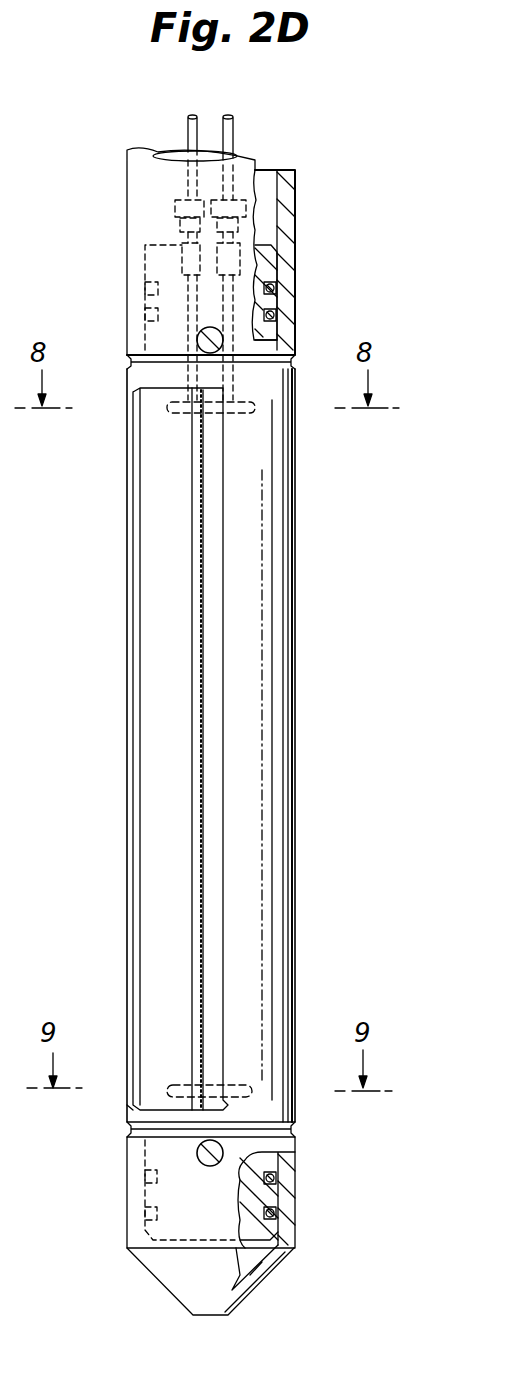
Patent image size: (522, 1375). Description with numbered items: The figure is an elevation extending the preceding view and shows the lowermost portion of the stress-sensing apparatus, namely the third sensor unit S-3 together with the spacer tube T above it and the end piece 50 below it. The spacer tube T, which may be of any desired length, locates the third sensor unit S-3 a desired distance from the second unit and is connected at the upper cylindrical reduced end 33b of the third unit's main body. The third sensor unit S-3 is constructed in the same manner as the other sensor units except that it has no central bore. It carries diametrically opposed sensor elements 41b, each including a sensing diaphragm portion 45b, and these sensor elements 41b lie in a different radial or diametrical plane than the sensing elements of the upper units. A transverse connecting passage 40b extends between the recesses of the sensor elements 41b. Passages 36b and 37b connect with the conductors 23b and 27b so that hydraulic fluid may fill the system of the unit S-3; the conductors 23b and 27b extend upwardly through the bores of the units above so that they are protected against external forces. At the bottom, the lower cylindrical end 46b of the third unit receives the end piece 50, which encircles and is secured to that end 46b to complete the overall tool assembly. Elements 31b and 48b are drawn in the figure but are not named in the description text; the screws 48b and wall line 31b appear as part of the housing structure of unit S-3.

The spacer tube T is at (127, 180).
The conductor 23b is at (188, 125).
The conductor 27b is at (233, 128).
The upper cylindrical reduced end 33b is at (266, 258).
The passage 37b is at (158, 302).
The passage 36b is at (145, 300).
The housing wall 31b is at (283, 483).
The third sensor unit S-3 is at (275, 572).
The sensor element 41b is at (157, 520).
The sensing diaphragm portion 45b is at (160, 563).
The transverse connecting passage 40b is at (235, 1083).
The screw 48b is at (196, 1153).
The lower cylindrical end 46b is at (250, 1200).
The end piece 50 is at (143, 1268).